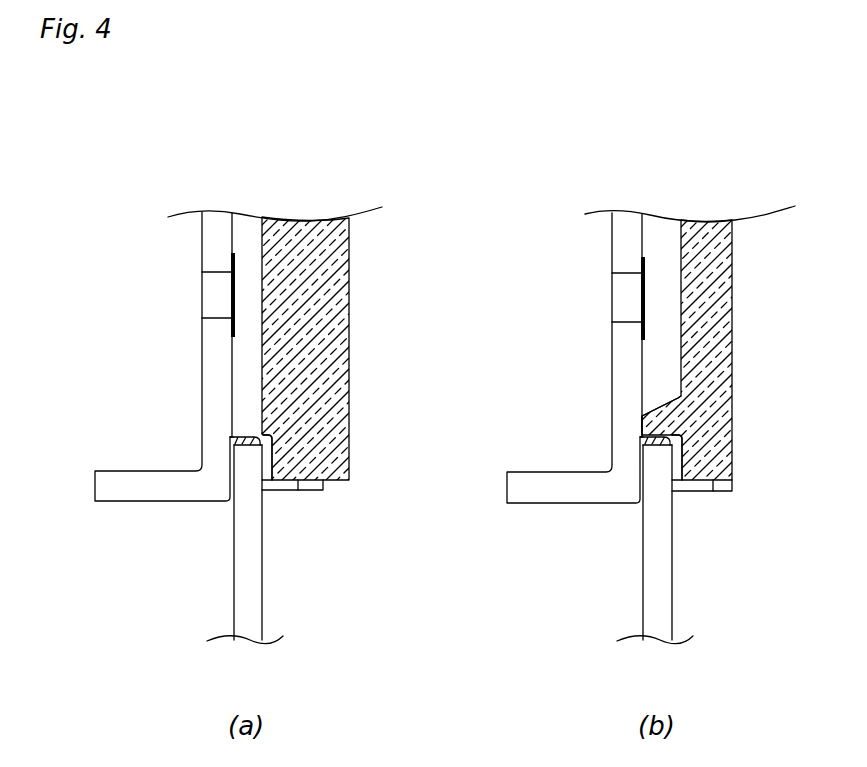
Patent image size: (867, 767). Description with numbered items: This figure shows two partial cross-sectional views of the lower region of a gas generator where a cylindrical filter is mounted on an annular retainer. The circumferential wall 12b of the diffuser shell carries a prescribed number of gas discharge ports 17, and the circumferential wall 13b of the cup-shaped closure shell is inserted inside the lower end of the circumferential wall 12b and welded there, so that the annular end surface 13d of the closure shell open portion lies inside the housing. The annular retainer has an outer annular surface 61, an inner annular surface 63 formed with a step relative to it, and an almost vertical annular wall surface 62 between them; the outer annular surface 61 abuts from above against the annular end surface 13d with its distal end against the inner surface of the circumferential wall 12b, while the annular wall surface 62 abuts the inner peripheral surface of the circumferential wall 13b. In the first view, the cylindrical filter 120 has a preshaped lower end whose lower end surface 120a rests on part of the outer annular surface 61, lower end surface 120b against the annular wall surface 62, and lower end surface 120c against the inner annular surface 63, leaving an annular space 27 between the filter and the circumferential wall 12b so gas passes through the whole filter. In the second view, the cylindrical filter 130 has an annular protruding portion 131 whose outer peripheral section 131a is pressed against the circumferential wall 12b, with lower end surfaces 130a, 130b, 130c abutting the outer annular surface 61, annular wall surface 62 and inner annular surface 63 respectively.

The annular space 27 is at (243, 235).
The circumferential wall 12b is at (210, 245).
The gas discharge ports 17 is at (213, 293).
The circumferential wall 13b is at (243, 585).
The annular end surface 13d is at (232, 430).
The outer annular surface 61 is at (244, 432).
The annular wall surface 62 is at (263, 475).
The inner annular surface 63 is at (287, 484).
The cylindrical filter 120 is at (338, 323).
The lower end surface 120a is at (257, 436).
The lower end surface 120b is at (268, 460).
The lower end surface 120c is at (300, 491).
The cylindrical filter 130 is at (715, 305).
The lower end surface 130a is at (640, 457).
The lower end surface 130b is at (676, 457).
The lower end surface 130c is at (713, 491).
The annular protruding portion 131 is at (662, 416).
The outer peripheral section 131a is at (678, 441).